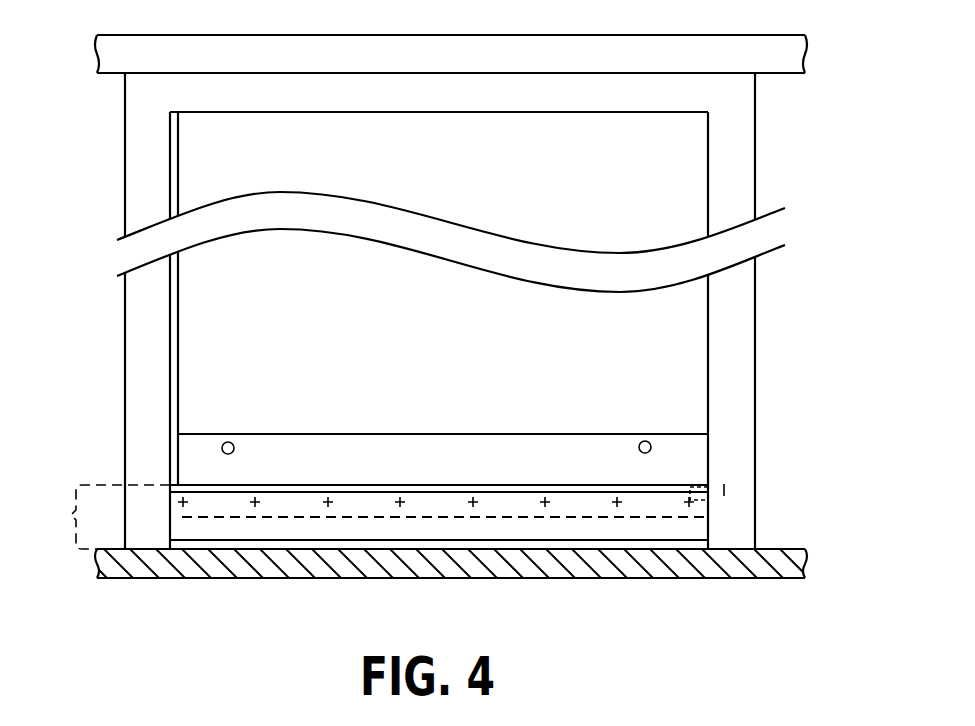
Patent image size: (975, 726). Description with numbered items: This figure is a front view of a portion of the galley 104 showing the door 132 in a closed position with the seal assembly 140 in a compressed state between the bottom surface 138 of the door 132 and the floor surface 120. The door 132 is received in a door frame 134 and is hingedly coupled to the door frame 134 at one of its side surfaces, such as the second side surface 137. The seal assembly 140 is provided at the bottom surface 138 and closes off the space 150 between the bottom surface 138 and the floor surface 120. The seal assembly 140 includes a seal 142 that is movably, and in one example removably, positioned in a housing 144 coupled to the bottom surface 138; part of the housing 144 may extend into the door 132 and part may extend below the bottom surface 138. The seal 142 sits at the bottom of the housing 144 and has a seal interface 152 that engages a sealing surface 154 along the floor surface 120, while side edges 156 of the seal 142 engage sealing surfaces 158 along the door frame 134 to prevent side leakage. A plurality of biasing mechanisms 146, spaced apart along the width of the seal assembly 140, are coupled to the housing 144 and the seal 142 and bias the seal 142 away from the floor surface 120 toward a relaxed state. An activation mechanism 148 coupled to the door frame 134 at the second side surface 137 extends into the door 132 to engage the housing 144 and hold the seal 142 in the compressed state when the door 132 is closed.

The galley 104 is at (833, 88).
The floor surface 120 is at (780, 542).
The door 132 is at (672, 345).
The door frame 134 is at (740, 163).
The second side surface 137 is at (708, 408).
The bottom surface 138 is at (507, 485).
The seal assembly 140 is at (172, 519).
The seal 142 is at (647, 548).
The housing 144 is at (600, 530).
The biasing mechanism 146 is at (221, 448).
The activation mechanism 148 is at (727, 490).
The space 150 is at (70, 515).
The seal interface 152 is at (378, 556).
The sealing surface 154 is at (318, 538).
The side edges 156 is at (717, 548).
The sealing surfaces 158 is at (708, 528).